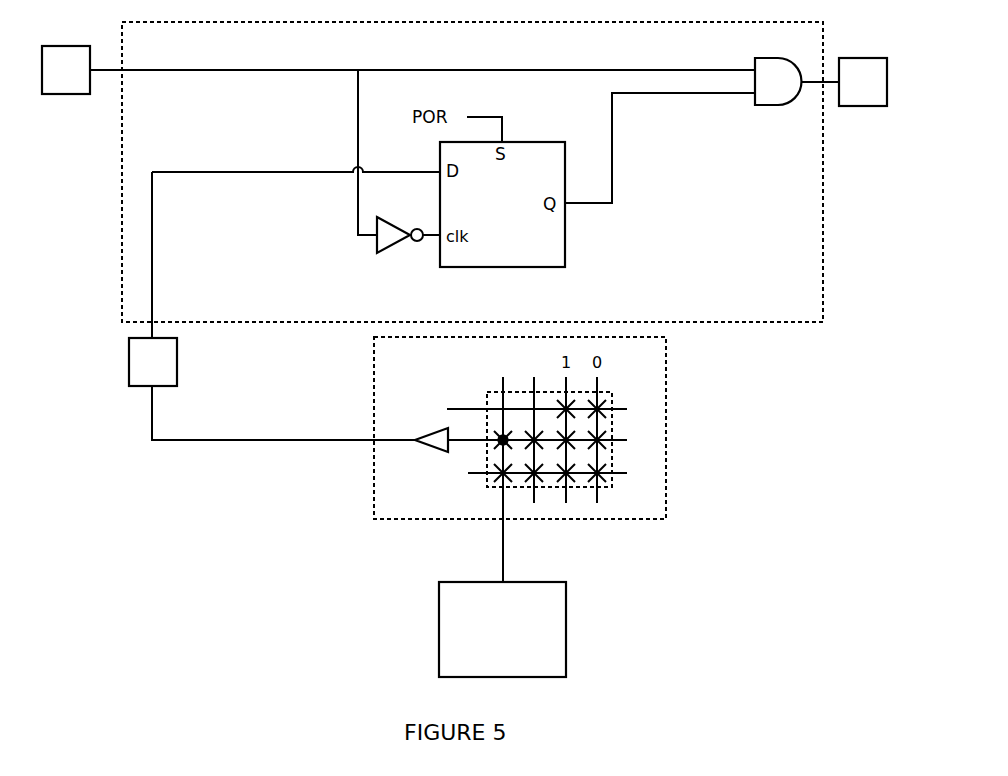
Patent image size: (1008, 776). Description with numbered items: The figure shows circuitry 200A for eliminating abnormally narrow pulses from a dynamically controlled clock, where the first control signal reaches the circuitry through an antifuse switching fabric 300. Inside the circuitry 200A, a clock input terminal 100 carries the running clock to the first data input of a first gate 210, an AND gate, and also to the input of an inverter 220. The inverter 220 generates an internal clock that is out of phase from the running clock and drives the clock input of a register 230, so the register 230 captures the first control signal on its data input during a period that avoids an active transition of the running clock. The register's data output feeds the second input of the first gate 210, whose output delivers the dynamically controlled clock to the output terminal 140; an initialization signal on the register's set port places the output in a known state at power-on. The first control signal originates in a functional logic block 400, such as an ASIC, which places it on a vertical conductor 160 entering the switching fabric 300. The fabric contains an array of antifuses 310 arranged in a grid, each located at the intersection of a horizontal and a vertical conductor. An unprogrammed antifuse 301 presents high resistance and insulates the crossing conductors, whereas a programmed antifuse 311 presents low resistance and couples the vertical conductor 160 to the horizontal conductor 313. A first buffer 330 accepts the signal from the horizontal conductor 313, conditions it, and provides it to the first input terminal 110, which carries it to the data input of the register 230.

The clock input terminal 100 is at (66, 70).
The circuitry 200A is at (472, 172).
The first gate 210 is at (778, 81).
The output terminal 140 is at (863, 82).
The register 230 is at (502, 204).
The inverter 220 is at (388, 248).
The first input terminal 110 is at (153, 362).
The antifuse switching fabric 300 is at (520, 428).
The unprogrammed antifuse 301 is at (604, 398).
The array of antifuses 310 is at (487, 477).
The programmed antifuse 311 is at (500, 434).
The horizontal conductor 313 is at (618, 440).
The first buffer 330 is at (437, 451).
The vertical conductor 160 is at (502, 525).
The functional logic block 400 is at (502, 629).